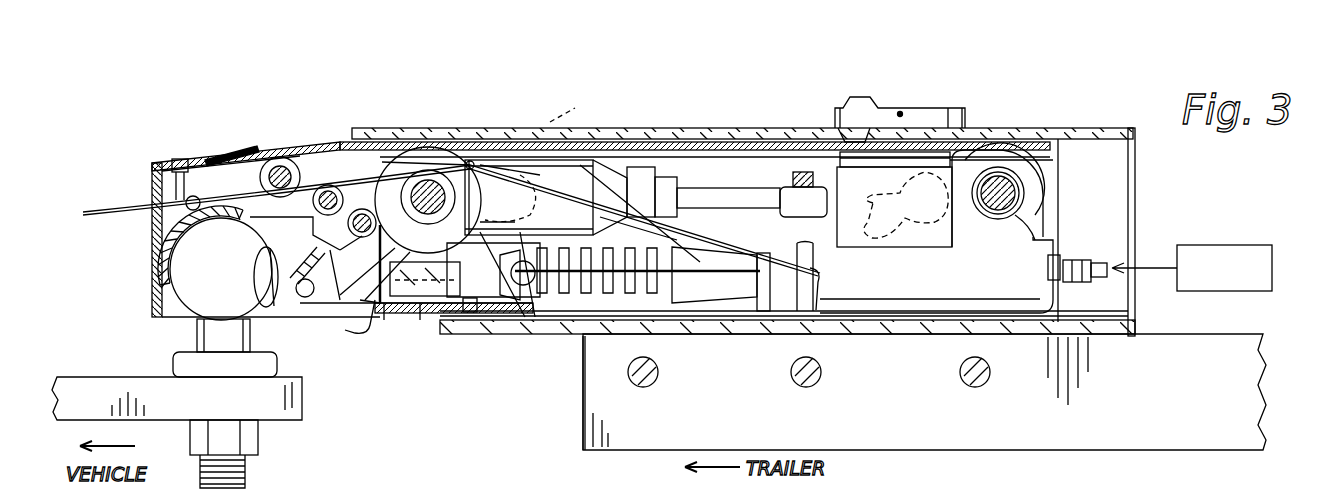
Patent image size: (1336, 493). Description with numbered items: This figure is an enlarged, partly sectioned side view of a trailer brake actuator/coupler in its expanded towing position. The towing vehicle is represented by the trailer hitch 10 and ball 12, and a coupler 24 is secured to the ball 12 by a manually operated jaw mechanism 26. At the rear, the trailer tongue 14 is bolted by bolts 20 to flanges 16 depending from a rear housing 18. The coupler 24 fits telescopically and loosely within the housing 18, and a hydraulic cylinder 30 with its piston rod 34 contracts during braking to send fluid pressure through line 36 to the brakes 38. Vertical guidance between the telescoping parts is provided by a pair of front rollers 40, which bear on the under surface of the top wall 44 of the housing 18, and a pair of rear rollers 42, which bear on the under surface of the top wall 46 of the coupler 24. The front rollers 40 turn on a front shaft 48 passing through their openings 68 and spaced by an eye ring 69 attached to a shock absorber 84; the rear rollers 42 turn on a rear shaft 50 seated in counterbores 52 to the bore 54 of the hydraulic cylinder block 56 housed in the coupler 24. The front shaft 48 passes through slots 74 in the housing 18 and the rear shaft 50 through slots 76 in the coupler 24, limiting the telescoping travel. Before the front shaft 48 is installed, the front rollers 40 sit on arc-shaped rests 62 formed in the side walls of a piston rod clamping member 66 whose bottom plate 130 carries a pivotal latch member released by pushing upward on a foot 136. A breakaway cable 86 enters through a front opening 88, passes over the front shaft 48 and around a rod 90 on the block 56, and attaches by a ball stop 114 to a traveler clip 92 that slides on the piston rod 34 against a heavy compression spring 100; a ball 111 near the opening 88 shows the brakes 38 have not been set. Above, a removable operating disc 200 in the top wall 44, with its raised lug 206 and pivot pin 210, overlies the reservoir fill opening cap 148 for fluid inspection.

The trailer hitch 10 is at (268, 437).
The ball 12 is at (190, 273).
The trailer tongue 14 is at (1220, 433).
The flanges 16 is at (585, 340).
The rear housing 18 is at (1087, 127).
The bolts 20 is at (656, 384).
The coupler 24 is at (277, 141).
The jaw mechanism 26 is at (265, 313).
The hydraulic cylinder 30 is at (908, 283).
The piston rod 34 is at (560, 320).
The line 36 is at (1097, 260).
The brakes 38 is at (1273, 291).
The front rollers 40 is at (380, 170).
The rear rollers 42 is at (1037, 192).
The top wall of housing 44 is at (532, 142).
The top wall of coupler 46 is at (733, 140).
The front shaft 48 is at (462, 165).
The rear shaft 50 is at (1015, 220).
The counterbores 52 is at (990, 215).
The bore 54 is at (1020, 175).
The hydraulic cylinder block 56 is at (1017, 223).
The rests 62 is at (420, 322).
The piston rod clamping member 66 is at (384, 322).
The openings in front rollers 68 is at (432, 175).
The bushing or eye ring 69 is at (428, 172).
The slots 74 is at (575, 108).
The slots 76 is at (906, 206).
The shock absorber 84 is at (600, 160).
The breakaway cable 86 is at (130, 206).
The front opening 88 is at (153, 217).
The rod 90 is at (800, 316).
The traveler clip 92 is at (520, 320).
The compression spring 100 is at (620, 290).
The ball 111 is at (193, 165).
The ball stop 114 is at (517, 225).
The bottom plate 130 is at (430, 320).
The foot 136 is at (358, 335).
The fill opening cap 148 is at (860, 127).
The operating disc 200 is at (933, 127).
The lug 206 is at (967, 113).
The pin 210 is at (900, 112).